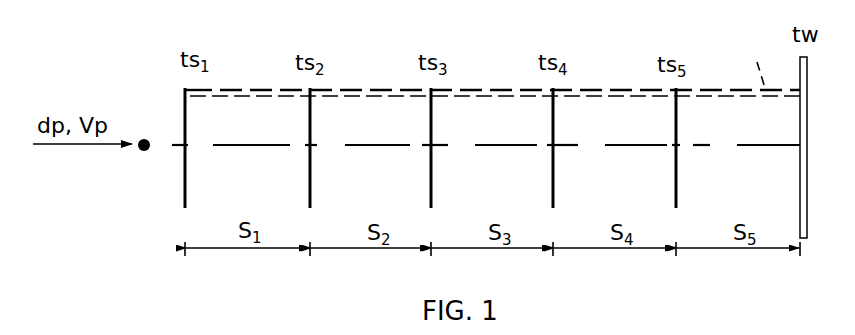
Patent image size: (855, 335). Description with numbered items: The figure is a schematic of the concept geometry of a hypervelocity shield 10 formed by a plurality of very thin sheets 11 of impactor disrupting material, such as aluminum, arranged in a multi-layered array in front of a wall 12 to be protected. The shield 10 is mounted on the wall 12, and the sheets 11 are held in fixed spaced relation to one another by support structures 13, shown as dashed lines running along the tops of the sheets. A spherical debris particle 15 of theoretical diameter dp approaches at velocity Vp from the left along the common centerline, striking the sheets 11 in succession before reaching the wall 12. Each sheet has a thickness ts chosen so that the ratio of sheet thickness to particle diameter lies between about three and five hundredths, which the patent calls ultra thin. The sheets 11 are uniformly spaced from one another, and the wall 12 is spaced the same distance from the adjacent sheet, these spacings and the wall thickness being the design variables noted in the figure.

The hypervelocity shield 10 is at (183, 187).
The very thin sheets 11 is at (308, 180).
The wall 12 is at (798, 180).
The support structures 13 is at (287, 88).
The spherical debris particle 15 is at (138, 129).